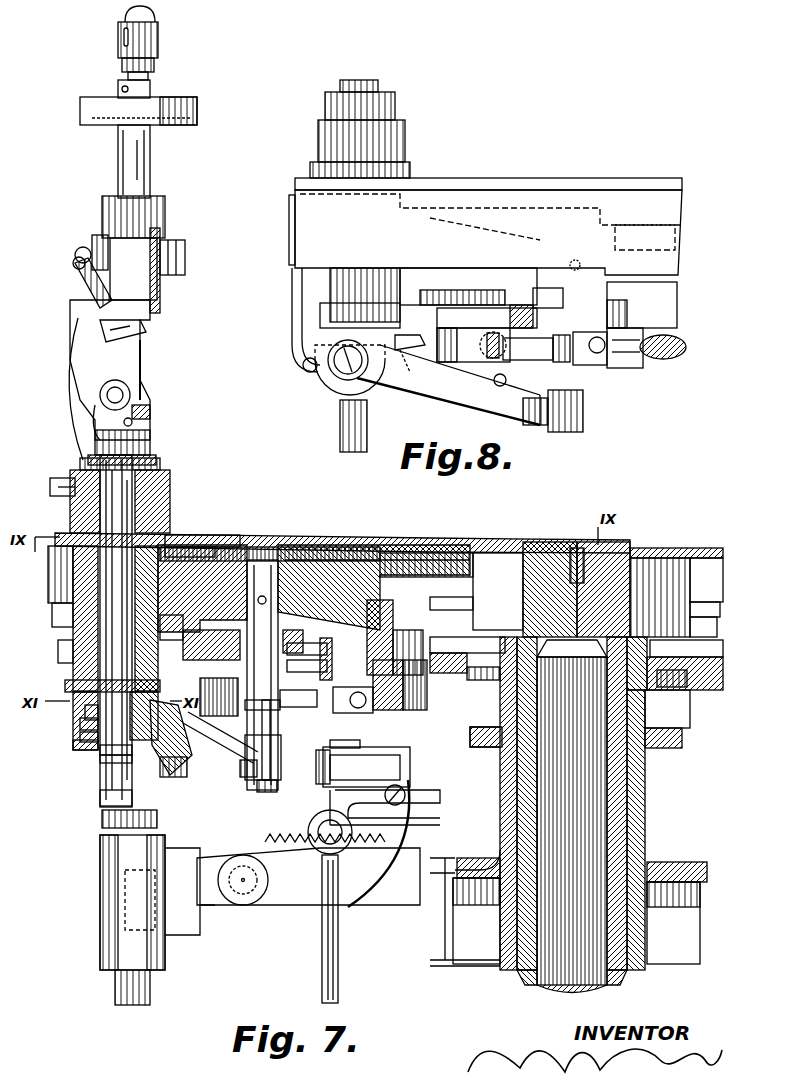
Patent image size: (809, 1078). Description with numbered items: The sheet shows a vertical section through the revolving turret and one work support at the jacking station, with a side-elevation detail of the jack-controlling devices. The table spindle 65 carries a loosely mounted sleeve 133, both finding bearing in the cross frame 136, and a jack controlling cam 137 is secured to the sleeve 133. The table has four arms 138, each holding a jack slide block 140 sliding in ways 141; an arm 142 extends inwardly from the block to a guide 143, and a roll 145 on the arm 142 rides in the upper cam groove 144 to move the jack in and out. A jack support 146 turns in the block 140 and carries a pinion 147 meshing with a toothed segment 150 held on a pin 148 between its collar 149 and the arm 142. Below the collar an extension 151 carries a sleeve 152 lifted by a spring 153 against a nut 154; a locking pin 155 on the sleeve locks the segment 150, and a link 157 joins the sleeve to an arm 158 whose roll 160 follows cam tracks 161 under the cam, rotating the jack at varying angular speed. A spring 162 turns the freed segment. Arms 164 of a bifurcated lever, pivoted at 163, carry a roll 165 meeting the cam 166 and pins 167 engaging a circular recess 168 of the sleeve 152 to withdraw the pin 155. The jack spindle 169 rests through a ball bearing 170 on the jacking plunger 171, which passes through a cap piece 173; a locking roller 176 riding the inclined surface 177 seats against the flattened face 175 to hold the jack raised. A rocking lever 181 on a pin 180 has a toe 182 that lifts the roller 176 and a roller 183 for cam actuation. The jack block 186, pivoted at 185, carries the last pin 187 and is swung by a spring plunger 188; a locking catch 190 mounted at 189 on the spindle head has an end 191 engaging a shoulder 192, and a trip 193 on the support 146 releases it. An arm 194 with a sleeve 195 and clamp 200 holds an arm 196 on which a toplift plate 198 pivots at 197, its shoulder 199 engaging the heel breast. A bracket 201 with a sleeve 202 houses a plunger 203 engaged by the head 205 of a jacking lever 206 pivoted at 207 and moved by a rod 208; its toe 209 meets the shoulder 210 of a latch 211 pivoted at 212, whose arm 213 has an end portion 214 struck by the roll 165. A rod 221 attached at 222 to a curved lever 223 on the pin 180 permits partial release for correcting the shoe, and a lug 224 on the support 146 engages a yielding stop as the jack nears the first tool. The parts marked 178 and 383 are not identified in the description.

In FIG. 7, the table spindle 65 is at (600, 838).
In FIG. 7, the sleeve 133 is at (625, 865).
In FIG. 7, the cross frame 136 is at (700, 897).
In FIG. 7, the jack controlling cam 137 is at (715, 690).
In FIG. 8, the jack controlling cam 137 is at (678, 295).
In FIG. 7, the arms 138 is at (672, 552).
In FIG. 8, the arms 138 is at (585, 190).
In FIG. 7, the jack slide block 140 is at (50, 575).
In FIG. 7, the ways or guides 141 is at (186, 540).
In FIG. 7, the arm 142 is at (320, 560).
In FIG. 8, the arm 142 is at (450, 225).
In FIG. 7, the guide 143 is at (455, 575).
In FIG. 7, the upper cam groove 144 is at (375, 660).
In FIG. 7, the roll or pin 145 is at (372, 640).
In FIG. 7, the jack support 146 is at (158, 503).
In FIG. 8, the jack support 146 is at (395, 140).
In FIG. 7, the pinion 147 is at (58, 645).
In FIG. 7, the pin or support 148 is at (287, 590).
In FIG. 7, the collar 149 is at (262, 558).
In FIG. 7, the toothed segment 150 is at (178, 552).
In FIG. 8, the toothed segment 150 is at (430, 283).
In FIG. 7, the extension 151 is at (362, 712).
In FIG. 7, the sleeve 152 is at (260, 698).
In FIG. 8, the sleeve 152 is at (485, 350).
In FIG. 7, the spring 153 is at (250, 785).
In FIG. 7, the stop or nut 154 is at (268, 795).
In FIG. 8, the locking pin 155 is at (520, 300).
In FIG. 7, the link 157 is at (300, 707).
In FIG. 8, the link 157 is at (560, 360).
In FIG. 7, the arm 158 is at (418, 705).
In FIG. 8, the arm 158 is at (686, 350).
In FIG. 7, the roll 160 is at (420, 685).
In FIG. 7, the cam tracks or grooves 161 is at (683, 705).
In FIG. 7, the spring 162 is at (345, 565).
In FIG. 7, the pivot 163 is at (115, 735).
In FIG. 8, the pivot 163 is at (335, 372).
In FIG. 7, the arms of bifurcated lever 164 is at (220, 737).
In FIG. 8, the arms of bifurcated lever 164 is at (475, 398).
In FIG. 7, the roll 165 is at (340, 773).
In FIG. 8, the roll 165 is at (585, 420).
In FIG. 7, the cam 166 is at (370, 745).
In FIG. 7, the pin or roller 167 is at (340, 735).
In FIG. 8, the pin or roller 167 is at (502, 387).
In FIG. 7, the circular recess 168 is at (242, 778).
In FIG. 7, the jack spindle 169 is at (160, 480).
In FIG. 8, the jack spindle 169 is at (380, 85).
In FIG. 7, the ball bearing 170 is at (68, 686).
In FIG. 7, the jacking plunger 171 is at (105, 798).
In FIG. 8, the jacking plunger 171 is at (340, 438).
In FIG. 7, the depending cap piece 173 is at (95, 712).
In FIG. 7, the flattened face 175 is at (120, 806).
In FIG. 7, the locking roller 176 is at (120, 740).
In FIG. 7, the inclined surface 177 is at (200, 662).
In FIG. 7, the washer 178 is at (110, 720).
In FIG. 7, the pin 180 is at (120, 765).
In FIG. 8, the pin 180 is at (403, 370).
In FIG. 7, the rocking lever 181 is at (178, 760).
In FIG. 7, the catch-releasing toe portion 182 is at (125, 750).
In FIG. 7, the roller 183 is at (174, 778).
In FIG. 7, the pivot 185 is at (100, 390).
In FIG. 7, the jack block 186 is at (98, 362).
In FIG. 7, the last pin 187 is at (95, 290).
In FIG. 7, the spring plunger 188 is at (138, 378).
In FIG. 7, the mounting 189 is at (133, 422).
In FIG. 7, the locking catch 190 is at (150, 410).
In FIG. 7, the end 191 is at (96, 433).
In FIG. 7, the shoulder 192 is at (95, 412).
In FIG. 7, the stop or trip 193 is at (145, 393).
In FIG. 7, the arm 194 is at (122, 258).
In FIG. 7, the sleeve 195 is at (162, 290).
In FIG. 7, the arm 196 is at (150, 183).
In FIG. 7, the pivot 197 is at (120, 86).
In FIG. 7, the toplift plate 198 is at (218, 90).
In FIG. 7, the shoulder 199 is at (86, 122).
In FIG. 7, the clamp 200 is at (82, 252).
In FIG. 7, the bracket 201 is at (195, 935).
In FIG. 7, the sleeve 202 is at (100, 950).
In FIG. 7, the plunger 203 is at (118, 990).
In FIG. 7, the head 205 is at (118, 890).
In FIG. 7, the jacking lever 206 is at (280, 905).
In FIG. 7, the pivot 207 is at (243, 885).
In FIG. 7, the rod 208 is at (322, 972).
In FIG. 7, the catch or toe 209 is at (340, 860).
In FIG. 7, the shoulder 210 is at (400, 826).
In FIG. 7, the latch 211 is at (375, 895).
In FIG. 7, the pivot 212 is at (406, 797).
In FIG. 7, the arm 213 is at (410, 818).
In FIG. 7, the end portion 214 is at (325, 810).
In FIG. 8, the rod 221 is at (292, 285).
In FIG. 8, the pivot 222 is at (302, 366).
In FIG. 8, the curved lever 223 is at (330, 390).
In FIG. 7, the lug 224 is at (55, 486).
In FIG. 7, the flange 383 is at (683, 748).